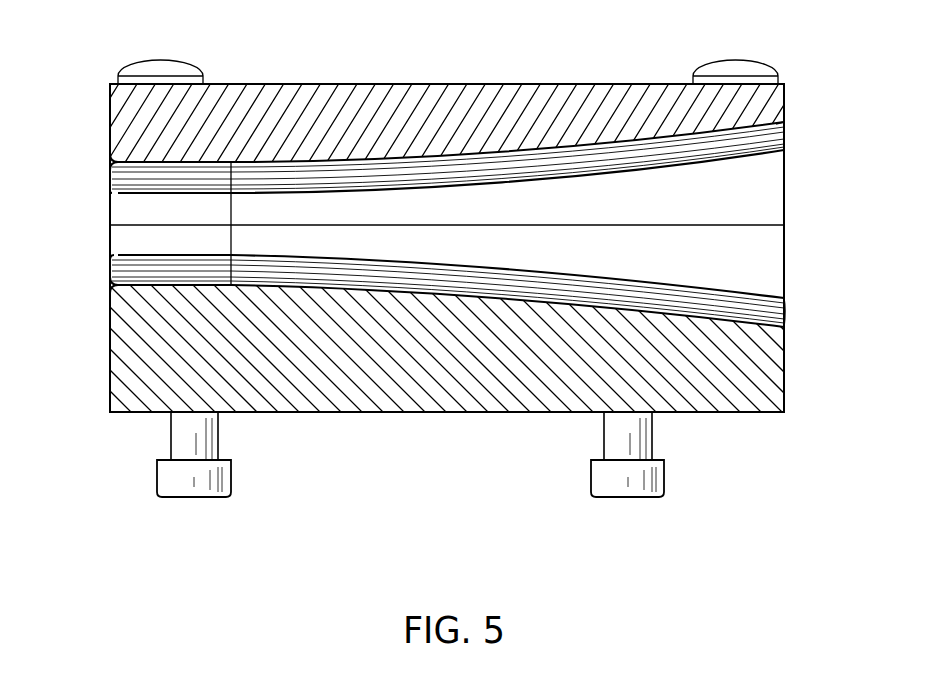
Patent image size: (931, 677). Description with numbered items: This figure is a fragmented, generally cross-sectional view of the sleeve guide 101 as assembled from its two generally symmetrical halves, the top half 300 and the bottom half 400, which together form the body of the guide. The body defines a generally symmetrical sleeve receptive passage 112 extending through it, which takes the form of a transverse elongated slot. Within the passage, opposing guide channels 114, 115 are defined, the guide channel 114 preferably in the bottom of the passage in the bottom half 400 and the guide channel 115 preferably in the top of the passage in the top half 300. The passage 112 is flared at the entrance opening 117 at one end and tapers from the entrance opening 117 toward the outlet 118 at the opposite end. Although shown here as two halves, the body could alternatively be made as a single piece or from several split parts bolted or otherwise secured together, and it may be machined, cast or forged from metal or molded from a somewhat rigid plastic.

The sleeve guide 101 is at (603, 58).
The top half 300 is at (342, 80).
The bottom half 400 is at (394, 418).
The guide channel 115 is at (651, 158).
The guide channel 114 is at (690, 297).
The sleeve receptive passage 112 is at (512, 219).
The entrance opening 117 is at (793, 315).
The outlet 118 is at (97, 272).